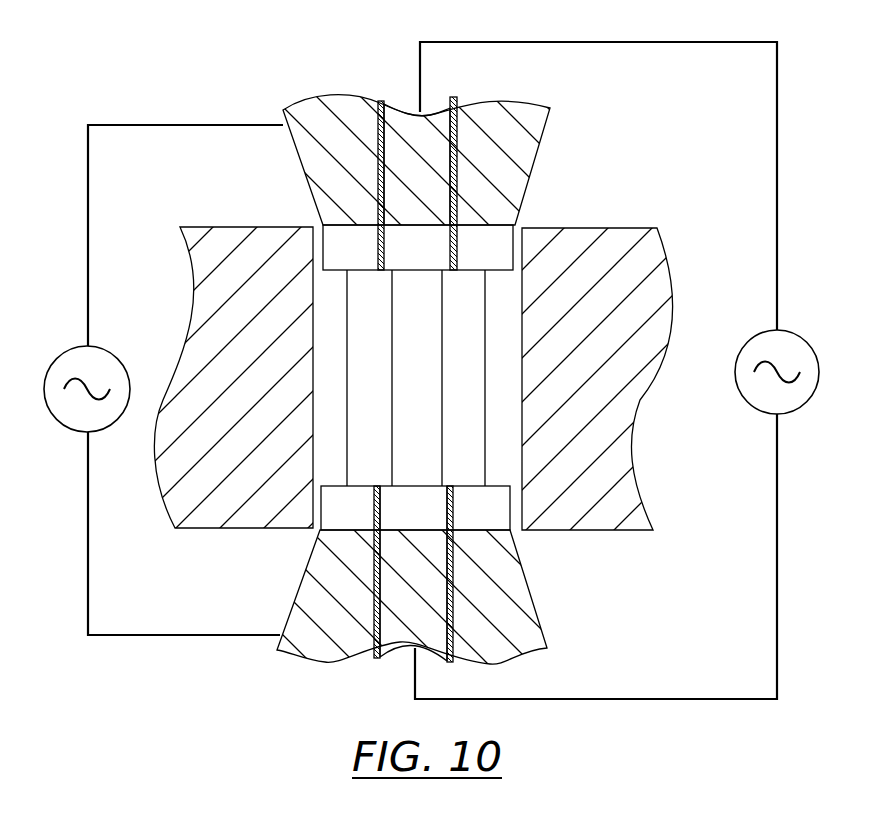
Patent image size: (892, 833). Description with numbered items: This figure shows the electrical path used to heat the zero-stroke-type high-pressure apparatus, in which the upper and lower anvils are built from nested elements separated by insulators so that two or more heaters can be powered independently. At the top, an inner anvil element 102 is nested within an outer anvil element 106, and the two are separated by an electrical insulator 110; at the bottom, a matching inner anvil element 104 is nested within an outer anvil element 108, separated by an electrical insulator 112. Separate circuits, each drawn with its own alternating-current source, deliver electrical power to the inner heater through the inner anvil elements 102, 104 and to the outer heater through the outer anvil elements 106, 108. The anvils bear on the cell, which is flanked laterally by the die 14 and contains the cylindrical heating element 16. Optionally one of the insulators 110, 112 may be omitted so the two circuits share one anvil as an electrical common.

The die 14 is at (222, 296).
The heating element 16 is at (652, 295).
The inner anvil element 102 is at (404, 125).
The inner anvil element 104 is at (400, 636).
The outer anvil element 106 is at (320, 122).
The outer anvil element 108 is at (313, 652).
The electrical insulator 110 is at (457, 143).
The electrical insulator 112 is at (452, 590).